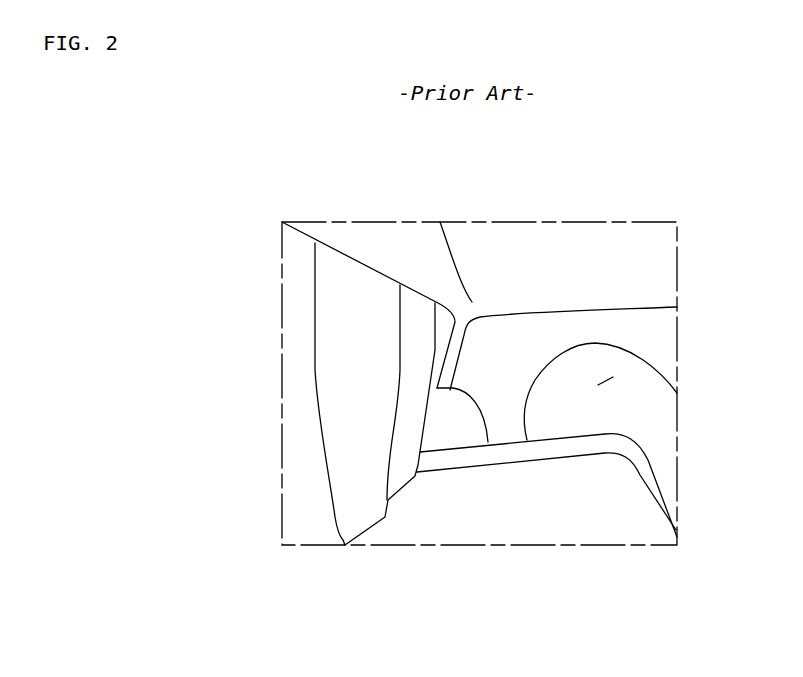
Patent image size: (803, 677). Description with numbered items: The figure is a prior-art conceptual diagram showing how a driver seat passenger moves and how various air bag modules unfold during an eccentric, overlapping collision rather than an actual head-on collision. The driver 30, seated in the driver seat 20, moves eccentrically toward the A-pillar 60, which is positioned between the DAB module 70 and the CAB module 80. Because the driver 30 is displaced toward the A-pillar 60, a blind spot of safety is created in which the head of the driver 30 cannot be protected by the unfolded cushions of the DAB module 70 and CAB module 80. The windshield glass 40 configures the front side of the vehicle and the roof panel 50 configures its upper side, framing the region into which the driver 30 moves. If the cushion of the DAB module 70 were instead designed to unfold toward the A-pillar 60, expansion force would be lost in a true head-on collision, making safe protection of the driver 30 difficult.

The driver seat 20 is at (558, 517).
The driver 30 is at (455, 420).
The windshield glass 40 is at (516, 378).
The roof panel 50 is at (623, 258).
The A-pillar 60 is at (455, 348).
The DAB module 70 is at (630, 378).
The CAB module 80 is at (358, 413).